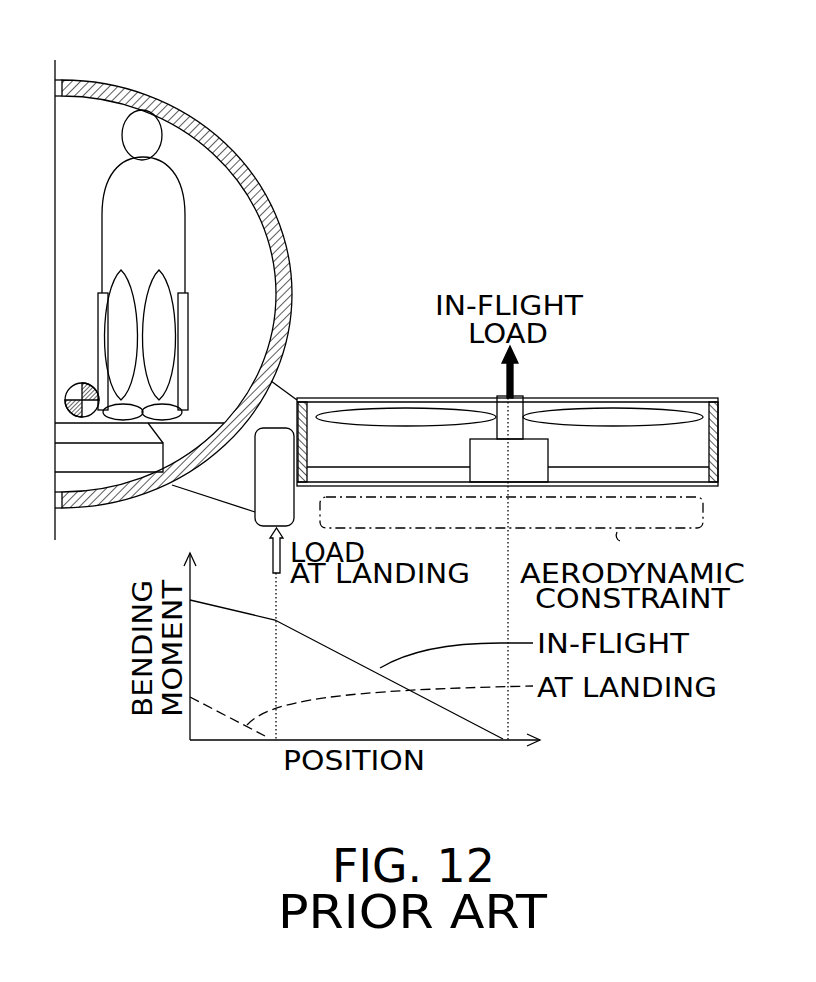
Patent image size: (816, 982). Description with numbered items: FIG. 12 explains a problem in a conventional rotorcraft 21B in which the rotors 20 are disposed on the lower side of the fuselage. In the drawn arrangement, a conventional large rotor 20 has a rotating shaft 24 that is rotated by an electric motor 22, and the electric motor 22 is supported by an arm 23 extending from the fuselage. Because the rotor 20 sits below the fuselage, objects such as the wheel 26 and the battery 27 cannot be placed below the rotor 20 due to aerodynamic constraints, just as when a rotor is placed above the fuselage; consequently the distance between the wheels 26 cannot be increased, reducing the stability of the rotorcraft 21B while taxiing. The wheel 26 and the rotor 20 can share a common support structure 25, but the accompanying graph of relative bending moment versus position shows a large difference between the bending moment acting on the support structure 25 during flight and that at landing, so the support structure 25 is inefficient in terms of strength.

The rotorcraft 21B is at (270, 88).
The rotor 20 is at (598, 415).
The electric motor 22 is at (488, 460).
The arm 23 is at (351, 478).
The rotating shaft 24 is at (517, 415).
The support structure 25 is at (280, 400).
The wheel 26 is at (270, 515).
The battery 27 is at (103, 462).